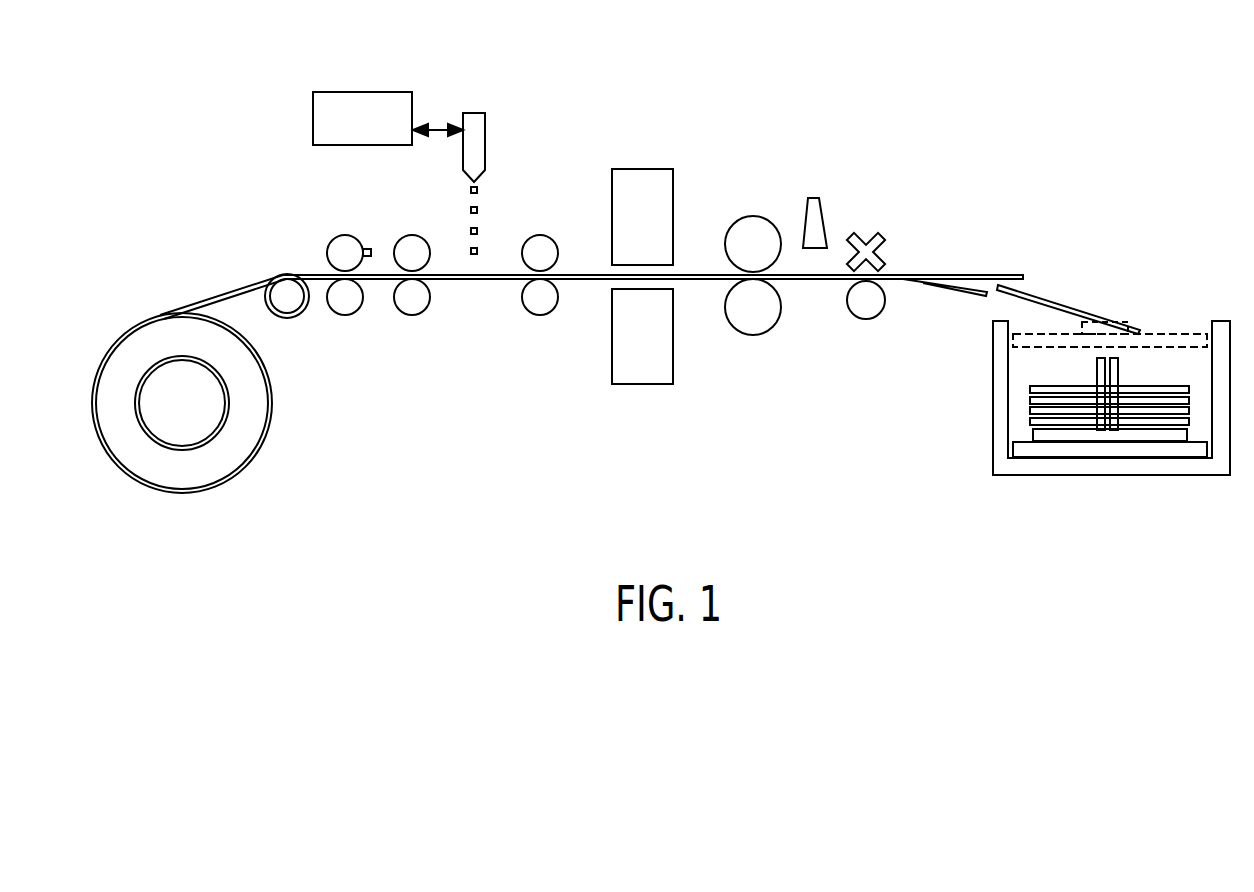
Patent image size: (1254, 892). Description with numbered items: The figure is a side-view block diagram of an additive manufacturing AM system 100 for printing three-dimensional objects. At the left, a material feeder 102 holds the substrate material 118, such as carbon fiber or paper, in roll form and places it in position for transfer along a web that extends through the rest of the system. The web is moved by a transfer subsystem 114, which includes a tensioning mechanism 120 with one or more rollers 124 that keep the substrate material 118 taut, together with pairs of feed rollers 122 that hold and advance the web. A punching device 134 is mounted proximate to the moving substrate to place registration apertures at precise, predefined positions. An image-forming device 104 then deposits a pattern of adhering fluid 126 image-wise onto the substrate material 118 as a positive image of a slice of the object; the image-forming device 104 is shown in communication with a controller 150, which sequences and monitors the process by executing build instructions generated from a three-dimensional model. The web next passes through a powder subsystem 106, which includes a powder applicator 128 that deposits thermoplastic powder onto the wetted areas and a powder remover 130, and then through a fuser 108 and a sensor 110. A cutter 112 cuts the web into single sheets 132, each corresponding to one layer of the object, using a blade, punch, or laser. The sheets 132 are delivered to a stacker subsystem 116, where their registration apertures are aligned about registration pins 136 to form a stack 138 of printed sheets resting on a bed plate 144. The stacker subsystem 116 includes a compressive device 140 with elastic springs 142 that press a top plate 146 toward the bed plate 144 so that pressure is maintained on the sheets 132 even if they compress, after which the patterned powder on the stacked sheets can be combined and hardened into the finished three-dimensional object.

The AM system 100 is at (218, 125).
The material feeder 102 is at (177, 494).
The image-forming device 104 is at (475, 112).
The powder subsystem 106 is at (668, 160).
The fuser 108 is at (752, 216).
The sensor 110 is at (813, 197).
The cutter 112 is at (862, 232).
The transfer subsystem 114 is at (297, 258).
The stacker subsystem 116 is at (1043, 489).
The substrate material 118 is at (223, 291).
The tensioning mechanism 120 is at (255, 262).
The feed rollers 122 is at (409, 236).
The rollers 124 is at (291, 318).
The fluid 126 is at (478, 211).
The powder applicator 128 is at (639, 168).
The powder remover 130 is at (642, 385).
The sheets 132 is at (1046, 298).
The punching device 134 is at (342, 236).
The registration pins 136 is at (1097, 378).
The stack 138 is at (1028, 404).
The compressive device 140 is at (1204, 316).
The springs 142 is at (1128, 321).
The bed plate 144 is at (1013, 450).
The top plate 146 is at (1166, 332).
The controller 150 is at (356, 92).